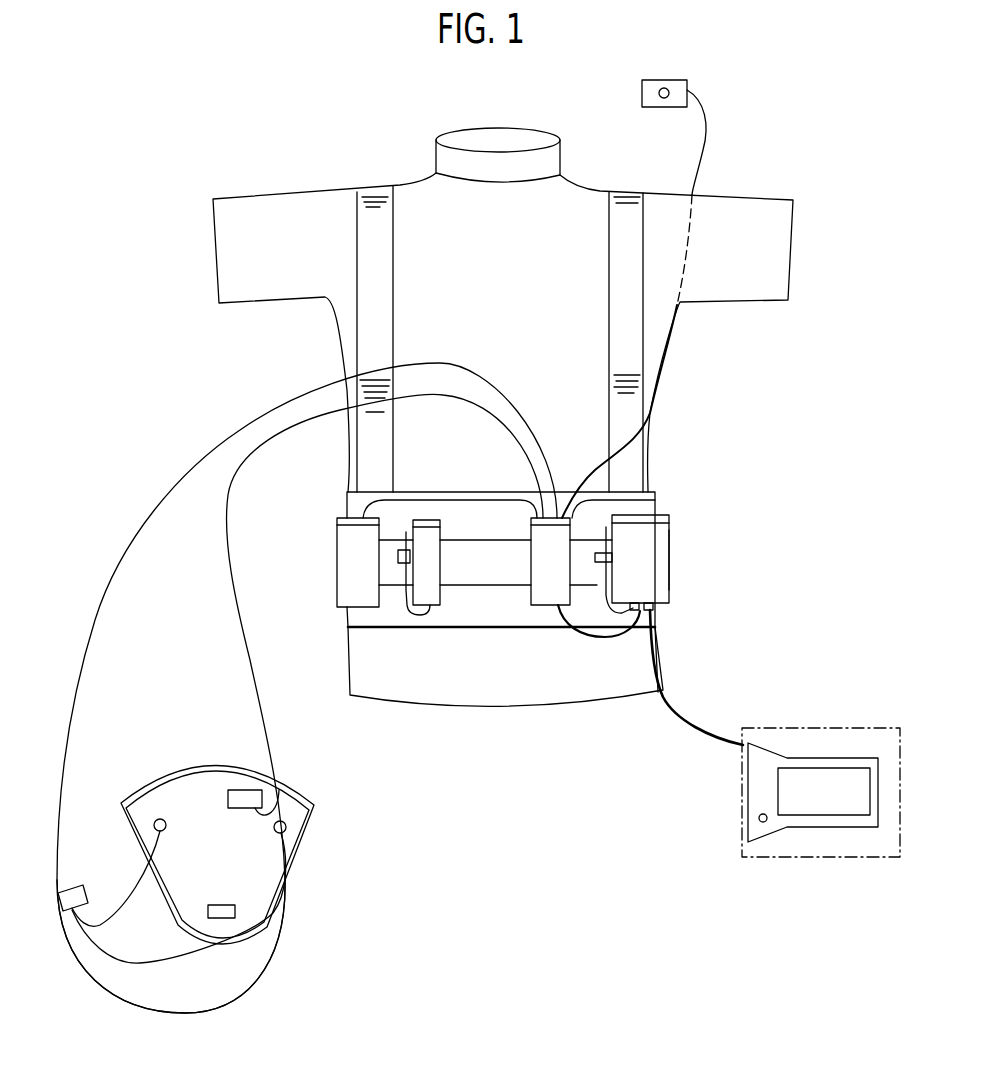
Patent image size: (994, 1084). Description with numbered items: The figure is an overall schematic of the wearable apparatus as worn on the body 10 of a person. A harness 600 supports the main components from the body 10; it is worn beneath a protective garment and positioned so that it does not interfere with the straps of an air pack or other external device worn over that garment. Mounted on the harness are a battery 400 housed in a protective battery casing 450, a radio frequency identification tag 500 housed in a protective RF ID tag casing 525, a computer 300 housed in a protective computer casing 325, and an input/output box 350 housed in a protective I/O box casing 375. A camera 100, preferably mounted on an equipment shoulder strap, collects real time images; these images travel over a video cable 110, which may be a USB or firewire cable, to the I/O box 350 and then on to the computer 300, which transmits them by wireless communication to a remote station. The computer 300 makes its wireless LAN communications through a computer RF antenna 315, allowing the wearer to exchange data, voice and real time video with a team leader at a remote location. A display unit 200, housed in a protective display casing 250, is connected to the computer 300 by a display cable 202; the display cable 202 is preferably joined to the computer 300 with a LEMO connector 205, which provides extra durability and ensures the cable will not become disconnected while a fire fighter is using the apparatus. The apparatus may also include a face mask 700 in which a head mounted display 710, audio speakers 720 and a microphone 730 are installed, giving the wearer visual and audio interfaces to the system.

The body 10 is at (753, 197).
The camera 100 is at (675, 78).
The video cable 110 is at (707, 132).
The display unit 200 is at (810, 757).
The display cable 202 is at (683, 717).
The LEMO connector 205 is at (653, 610).
The protective display casing 250 is at (807, 857).
The computer 300 is at (670, 518).
The computer RF antenna 315 is at (606, 515).
The protective computer casing 325 is at (670, 556).
The input/output (I/O) box 350 is at (533, 522).
The protective I/O box casing 375 is at (530, 588).
The battery 400 is at (347, 518).
The protective battery casing 450 is at (337, 578).
The radio frequency (RF) identification tag 500 is at (427, 518).
The protective RF ID tag casing 525 is at (455, 575).
The harness 600 is at (357, 318).
The face mask 700 is at (212, 765).
The head mounted display 710 is at (240, 790).
The audio speakers 720 is at (158, 822).
The microphone 730 is at (208, 913).